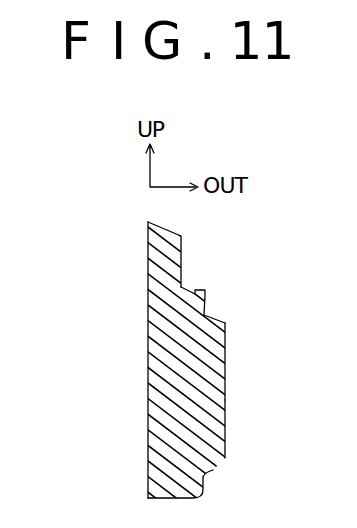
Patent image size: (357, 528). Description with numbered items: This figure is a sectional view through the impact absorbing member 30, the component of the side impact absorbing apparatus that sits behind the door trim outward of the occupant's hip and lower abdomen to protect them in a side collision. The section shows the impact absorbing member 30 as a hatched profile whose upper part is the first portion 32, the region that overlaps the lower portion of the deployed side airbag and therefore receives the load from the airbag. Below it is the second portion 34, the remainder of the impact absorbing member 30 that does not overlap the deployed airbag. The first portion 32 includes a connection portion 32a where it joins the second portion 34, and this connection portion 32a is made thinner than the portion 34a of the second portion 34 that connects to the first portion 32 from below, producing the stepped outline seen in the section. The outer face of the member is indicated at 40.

The impact absorbing member 30 is at (147, 450).
The first portion 32 is at (182, 257).
The connection portion 32a is at (148, 273).
The second portion 34 is at (211, 412).
The portion of the second portion 34a is at (203, 316).
The outer side surface 40 is at (225, 388).